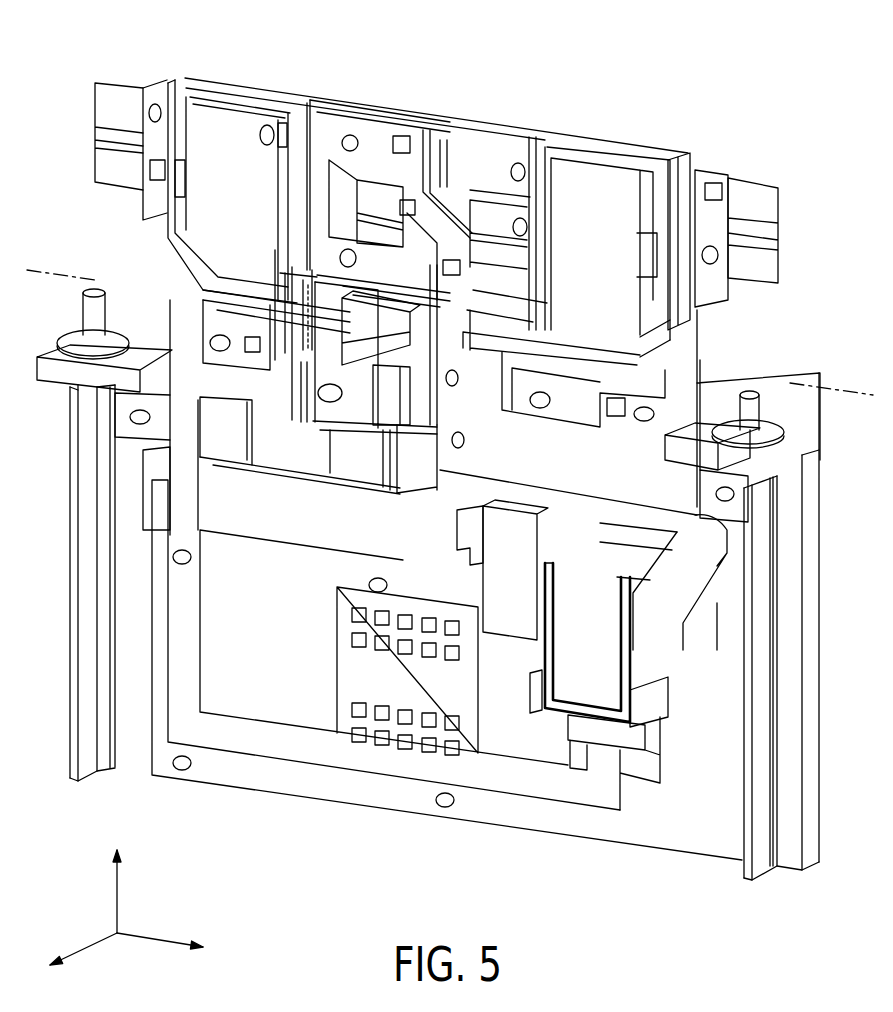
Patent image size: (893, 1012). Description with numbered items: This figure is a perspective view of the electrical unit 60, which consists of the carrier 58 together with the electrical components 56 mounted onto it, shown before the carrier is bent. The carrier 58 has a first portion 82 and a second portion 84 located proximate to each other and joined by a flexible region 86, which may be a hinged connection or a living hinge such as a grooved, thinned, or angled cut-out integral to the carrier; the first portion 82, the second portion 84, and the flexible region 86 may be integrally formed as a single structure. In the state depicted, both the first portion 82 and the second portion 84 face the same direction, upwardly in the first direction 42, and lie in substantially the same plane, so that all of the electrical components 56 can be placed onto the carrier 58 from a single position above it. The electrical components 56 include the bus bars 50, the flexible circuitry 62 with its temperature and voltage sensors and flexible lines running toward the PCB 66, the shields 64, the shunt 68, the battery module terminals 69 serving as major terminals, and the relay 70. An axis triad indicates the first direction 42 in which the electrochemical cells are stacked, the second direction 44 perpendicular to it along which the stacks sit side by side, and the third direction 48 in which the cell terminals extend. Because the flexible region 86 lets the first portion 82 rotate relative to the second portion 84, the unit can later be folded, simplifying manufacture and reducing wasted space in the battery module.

The first direction 42 is at (90, 948).
The second direction 44 is at (153, 943).
The third direction 48 is at (115, 897).
The bus bars 50 is at (375, 205).
The electrical components 56 is at (600, 450).
The carrier 58 is at (130, 577).
The electrical unit 60 is at (85, 230).
The flexible circuitry 62 is at (712, 284).
The shields 64 is at (247, 162).
The PCB 66 is at (290, 690).
The shunt 68 is at (317, 520).
The battery module terminals 69 is at (93, 322).
The relay 70 is at (600, 660).
The first portion 82 is at (684, 160).
The second portion 84 is at (790, 620).
The flexible region 86 is at (838, 390).